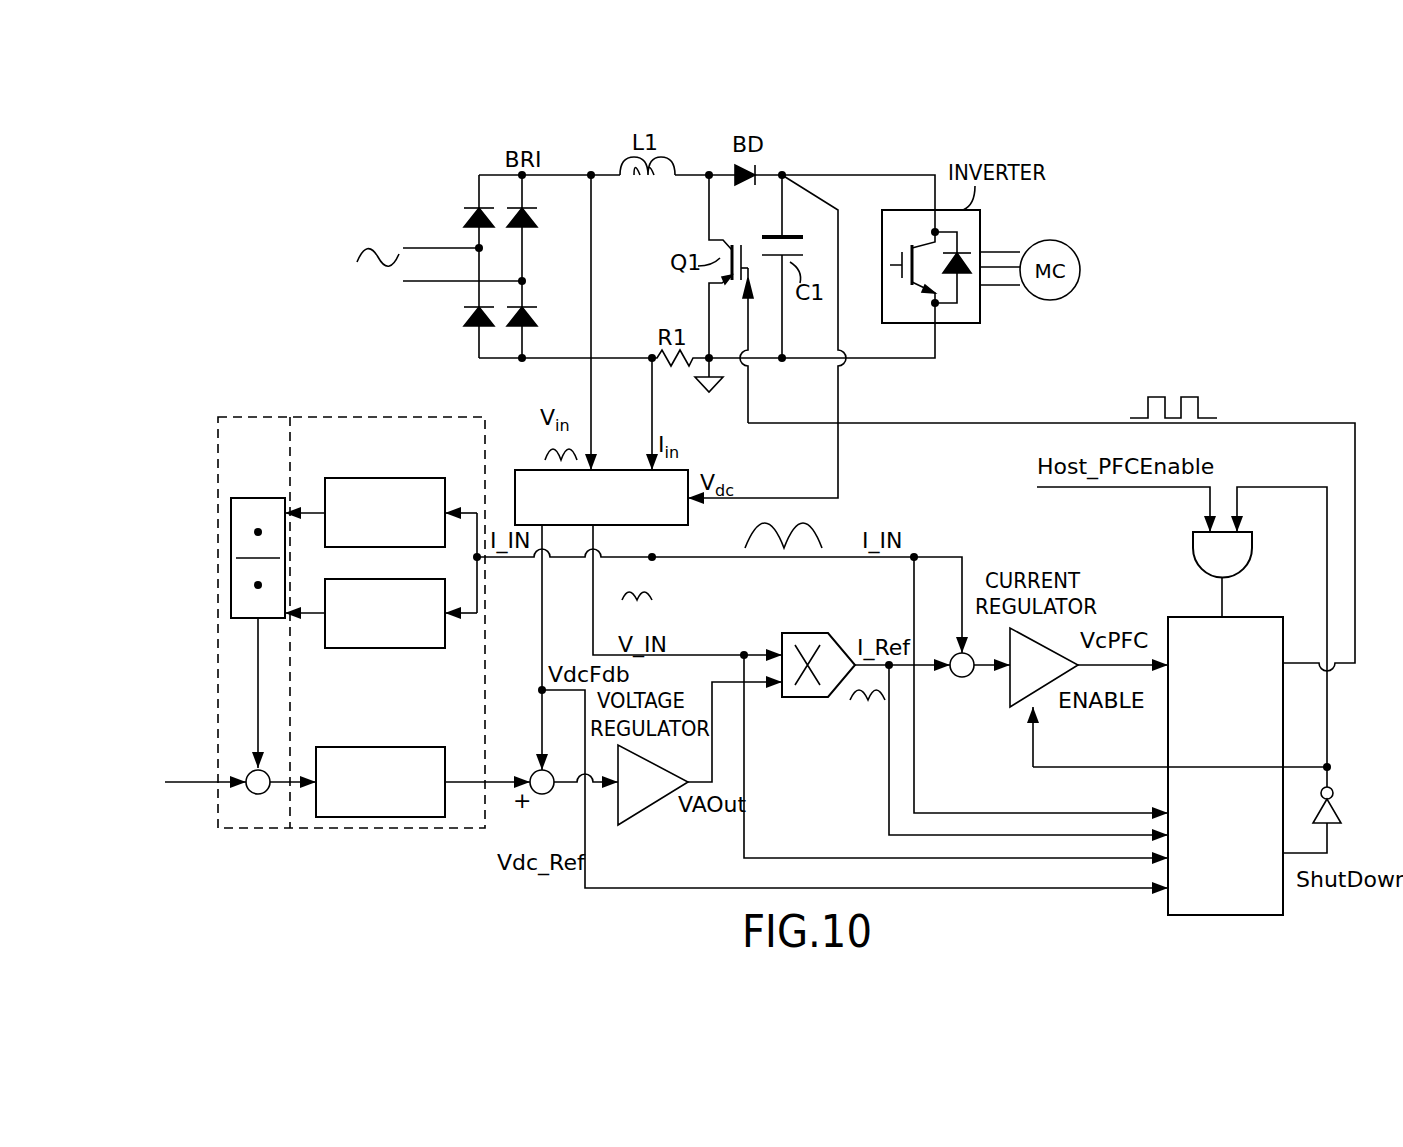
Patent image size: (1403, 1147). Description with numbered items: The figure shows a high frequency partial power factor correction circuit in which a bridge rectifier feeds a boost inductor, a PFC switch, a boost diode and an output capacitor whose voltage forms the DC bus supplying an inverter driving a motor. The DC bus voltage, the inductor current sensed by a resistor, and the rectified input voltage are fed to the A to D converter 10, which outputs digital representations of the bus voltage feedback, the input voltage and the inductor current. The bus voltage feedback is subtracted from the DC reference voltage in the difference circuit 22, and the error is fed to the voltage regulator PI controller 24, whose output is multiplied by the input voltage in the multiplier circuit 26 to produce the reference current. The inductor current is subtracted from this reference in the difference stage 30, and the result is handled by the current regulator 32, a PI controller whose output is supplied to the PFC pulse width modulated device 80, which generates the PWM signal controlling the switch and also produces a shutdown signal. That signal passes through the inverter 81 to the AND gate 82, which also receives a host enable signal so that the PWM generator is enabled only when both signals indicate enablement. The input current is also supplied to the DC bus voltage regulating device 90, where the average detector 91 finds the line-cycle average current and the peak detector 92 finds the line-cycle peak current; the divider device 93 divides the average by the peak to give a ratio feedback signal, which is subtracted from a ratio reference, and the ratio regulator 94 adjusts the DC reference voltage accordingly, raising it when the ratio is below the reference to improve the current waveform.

The A to D converter 10 is at (524, 470).
The difference circuit 22 is at (553, 795).
The PI controller 24 is at (636, 826).
The multiplier circuit 26 is at (810, 633).
The difference stage 30 is at (975, 680).
The current regulator 32 is at (1013, 700).
The PFC pulse width modulated device 80 is at (1286, 893).
The inverter 81 is at (1340, 812).
The AND gate 82 is at (1255, 556).
The DC bus voltage regulating device 90 is at (251, 417).
The average detector 91 is at (351, 478).
The peak detector 92 is at (433, 648).
The divider device 93 is at (231, 546).
The ratio regulator 94 is at (425, 817).